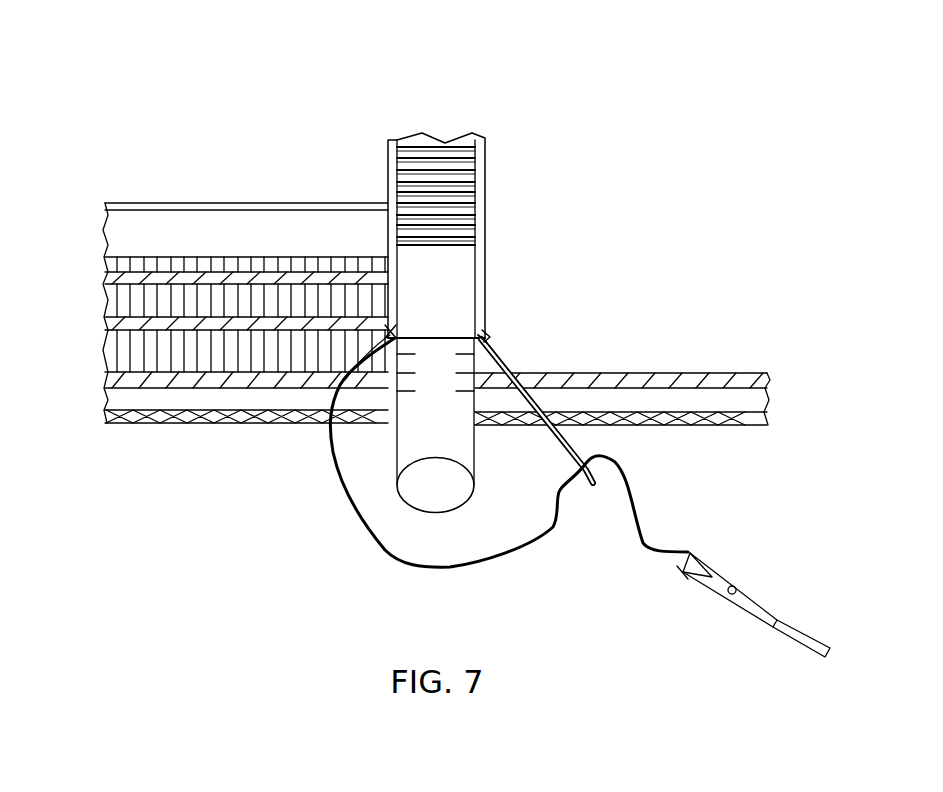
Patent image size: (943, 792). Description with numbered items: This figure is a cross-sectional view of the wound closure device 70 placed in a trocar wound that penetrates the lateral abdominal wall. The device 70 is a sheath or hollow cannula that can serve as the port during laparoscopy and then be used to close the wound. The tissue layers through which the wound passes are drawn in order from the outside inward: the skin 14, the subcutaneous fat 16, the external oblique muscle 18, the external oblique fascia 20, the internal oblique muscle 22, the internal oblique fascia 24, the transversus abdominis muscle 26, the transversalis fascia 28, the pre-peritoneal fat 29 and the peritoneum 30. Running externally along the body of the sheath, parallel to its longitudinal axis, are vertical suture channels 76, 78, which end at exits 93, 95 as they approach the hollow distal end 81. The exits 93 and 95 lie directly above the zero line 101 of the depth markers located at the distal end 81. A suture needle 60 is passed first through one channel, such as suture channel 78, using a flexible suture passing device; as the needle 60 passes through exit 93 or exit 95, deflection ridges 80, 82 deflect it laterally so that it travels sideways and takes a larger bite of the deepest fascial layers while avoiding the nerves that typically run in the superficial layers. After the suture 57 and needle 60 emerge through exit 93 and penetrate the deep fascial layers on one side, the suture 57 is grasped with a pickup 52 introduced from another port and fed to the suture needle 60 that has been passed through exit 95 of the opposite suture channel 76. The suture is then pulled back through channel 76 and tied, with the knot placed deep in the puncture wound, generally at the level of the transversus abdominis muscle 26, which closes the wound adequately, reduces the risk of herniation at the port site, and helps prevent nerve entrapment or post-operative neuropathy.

The skin 14 is at (165, 203).
The subcutaneous fat 16 is at (106, 222).
The external oblique muscle 18 is at (108, 268).
The external oblique fascia 20 is at (107, 280).
The internal oblique muscle 22 is at (108, 300).
The internal oblique fascia 24 is at (107, 323).
The transversus abdominis muscle 26 is at (108, 348).
The transversalis fascia 28 is at (107, 378).
The pre-peritoneal fat 29 is at (108, 404).
The peritoneum 30 is at (135, 423).
The pickup 52 is at (795, 625).
The suture 57 is at (370, 514).
The suture needle 60 is at (500, 367).
The wound closure device 70 is at (467, 100).
The vertical suture channel 76 is at (486, 180).
The vertical suture channel 78 is at (390, 160).
The deflection ridge 80 is at (488, 343).
The hollow distal end 81 is at (476, 482).
The deflection ridge 82 is at (332, 393).
The exit 93 is at (392, 331).
The exit 95 is at (489, 333).
The zero line 101 is at (437, 337).